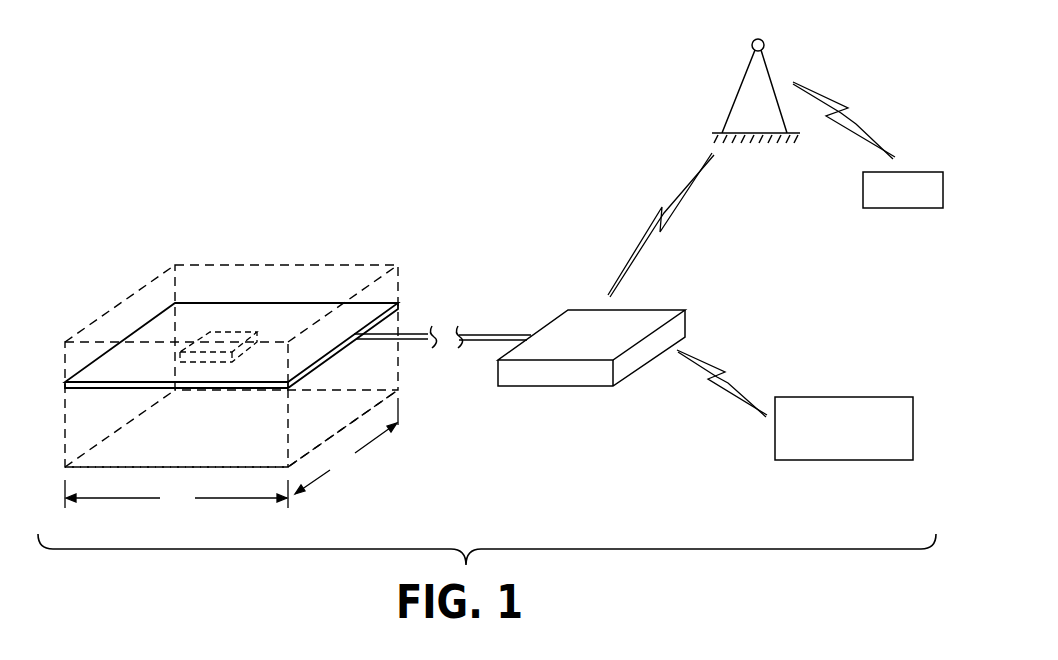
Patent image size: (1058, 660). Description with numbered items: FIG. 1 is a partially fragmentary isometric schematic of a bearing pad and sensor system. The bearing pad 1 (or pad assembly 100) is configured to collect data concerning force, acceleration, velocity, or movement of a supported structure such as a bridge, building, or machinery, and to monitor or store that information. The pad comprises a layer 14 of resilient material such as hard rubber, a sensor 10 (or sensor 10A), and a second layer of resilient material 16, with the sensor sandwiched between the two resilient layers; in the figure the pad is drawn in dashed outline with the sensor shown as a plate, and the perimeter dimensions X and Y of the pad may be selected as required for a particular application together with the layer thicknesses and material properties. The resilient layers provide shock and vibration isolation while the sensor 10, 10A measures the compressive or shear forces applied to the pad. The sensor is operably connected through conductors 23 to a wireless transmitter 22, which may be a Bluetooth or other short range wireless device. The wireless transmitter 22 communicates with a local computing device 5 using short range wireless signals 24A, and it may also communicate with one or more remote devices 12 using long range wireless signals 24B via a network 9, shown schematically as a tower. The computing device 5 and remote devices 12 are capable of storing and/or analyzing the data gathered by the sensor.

The bearing pad 1 is at (490, 267).
The pad assembly 100 is at (281, 256).
The sensor 10 is at (60, 382).
The sensor 10A is at (229, 325).
The layer of resilient material 14 is at (92, 408).
The second layer of resilient material 16 is at (108, 307).
The conductors 23 is at (498, 335).
The wireless transmitter 22 is at (535, 387).
The network 9 is at (750, 41).
The short range wireless signals 24A is at (718, 372).
The long range wireless signals 24B is at (648, 223).
The remote devices 12 is at (925, 208).
The computing device 5 is at (838, 392).